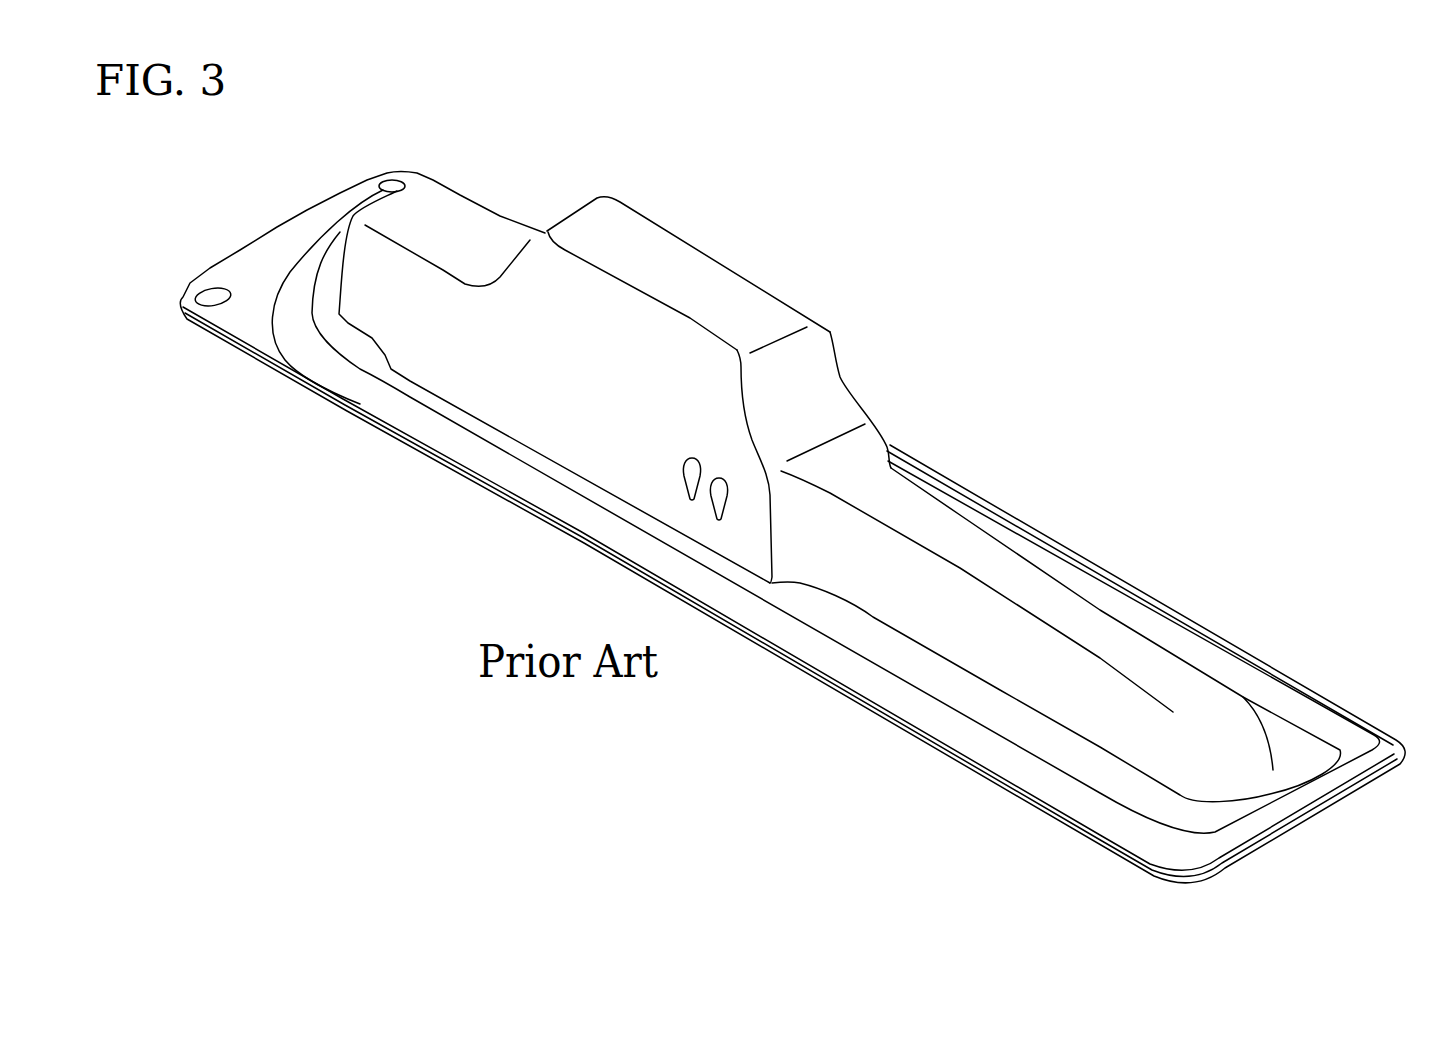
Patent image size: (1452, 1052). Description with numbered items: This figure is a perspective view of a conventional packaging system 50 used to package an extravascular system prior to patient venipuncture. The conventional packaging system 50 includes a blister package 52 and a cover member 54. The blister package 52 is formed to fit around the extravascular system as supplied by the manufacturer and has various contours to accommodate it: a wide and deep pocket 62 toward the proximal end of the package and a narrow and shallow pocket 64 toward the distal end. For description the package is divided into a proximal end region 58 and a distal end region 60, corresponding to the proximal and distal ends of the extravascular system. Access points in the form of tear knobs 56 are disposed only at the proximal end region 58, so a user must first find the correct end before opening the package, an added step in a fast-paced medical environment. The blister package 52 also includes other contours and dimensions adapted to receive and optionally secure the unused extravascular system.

The conventional packaging system 50 is at (378, 621).
The blister package 52 is at (807, 350).
The cover member 54 is at (1183, 865).
The tear knobs 56 is at (213, 288).
The proximal end region 58 is at (277, 227).
The distal end region 60 is at (1325, 815).
The wide and deep pocket 62 is at (687, 280).
The narrow and shallow pocket 64 is at (1148, 653).